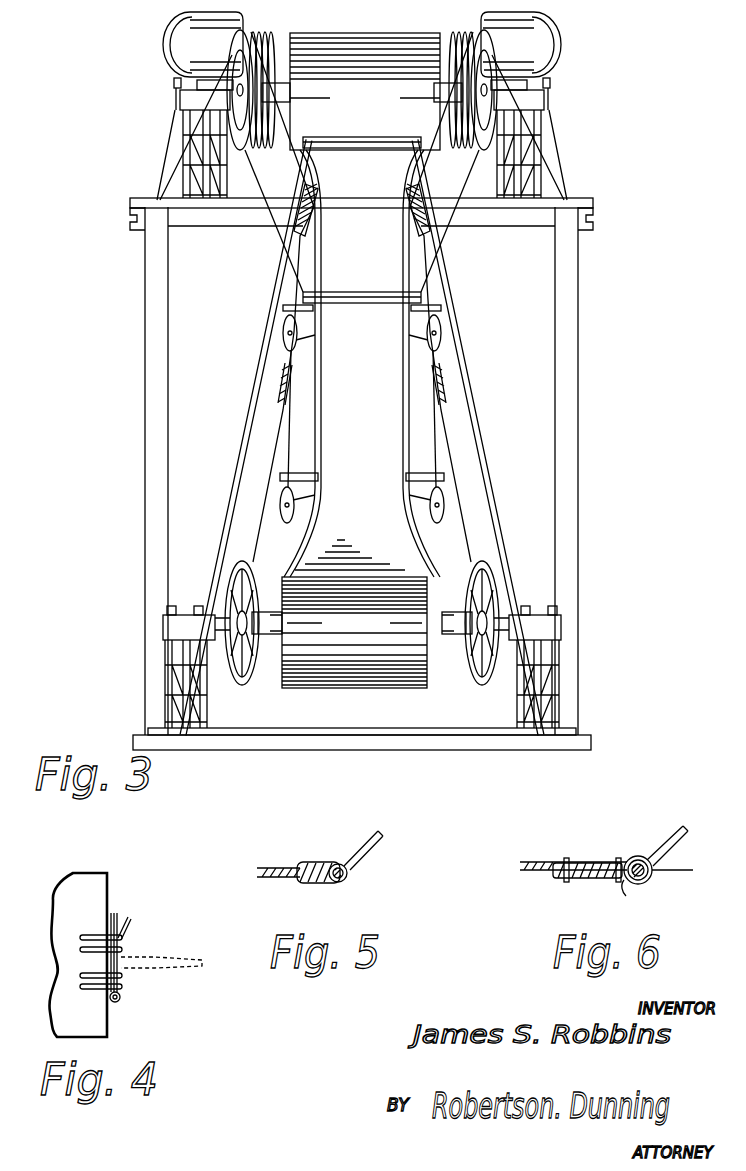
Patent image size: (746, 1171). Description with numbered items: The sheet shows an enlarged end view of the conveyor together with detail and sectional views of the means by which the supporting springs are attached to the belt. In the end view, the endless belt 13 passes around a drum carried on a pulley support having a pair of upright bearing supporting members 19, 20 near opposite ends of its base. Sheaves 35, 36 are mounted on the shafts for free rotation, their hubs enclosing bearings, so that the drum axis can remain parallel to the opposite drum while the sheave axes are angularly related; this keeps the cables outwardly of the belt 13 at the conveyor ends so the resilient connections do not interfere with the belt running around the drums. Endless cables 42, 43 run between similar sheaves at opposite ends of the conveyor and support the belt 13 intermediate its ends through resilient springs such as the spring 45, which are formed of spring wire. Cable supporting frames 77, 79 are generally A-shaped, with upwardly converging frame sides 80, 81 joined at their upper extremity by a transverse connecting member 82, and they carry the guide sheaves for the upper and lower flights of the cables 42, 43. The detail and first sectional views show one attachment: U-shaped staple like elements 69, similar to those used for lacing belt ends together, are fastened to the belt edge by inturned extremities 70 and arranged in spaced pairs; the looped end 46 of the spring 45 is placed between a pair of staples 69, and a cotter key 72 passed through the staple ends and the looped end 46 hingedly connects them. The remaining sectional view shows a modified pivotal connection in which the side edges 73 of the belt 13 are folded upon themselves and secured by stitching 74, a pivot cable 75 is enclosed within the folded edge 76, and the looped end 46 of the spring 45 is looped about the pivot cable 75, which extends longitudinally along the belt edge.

In FIG. 3, the endless belt 13 is at (364, 637).
In FIG. 4, the endless belt 13 is at (100, 888).
In FIG. 6, the endless belt 13 is at (541, 861).
In FIG. 3, the upright bearing supporting member 19 is at (180, 632).
In FIG. 3, the upright bearing supporting member 20 is at (545, 634).
In FIG. 3, the sheave 35 is at (256, 686).
In FIG. 3, the sheave 36 is at (462, 686).
In FIG. 3, the endless cable 42 is at (258, 513).
In FIG. 3, the endless cable 43 is at (458, 522).
In FIG. 5, the resilient spring 45 is at (358, 845).
In FIG. 6, the resilient spring 45 is at (672, 848).
In FIG. 5, the looped end 46 is at (345, 882).
In FIG. 6, the looped end 46 is at (640, 856).
In FIG. 4, the staple like element 69 is at (123, 950).
In FIG. 5, the staple like element 69 is at (320, 862).
In FIG. 5, the inturned extremity 70 is at (298, 868).
In FIG. 4, the cotter key 72 is at (117, 1003).
In FIG. 6, the side edge 73 is at (578, 878).
In FIG. 6, the stitching 74 is at (617, 858).
In FIG. 6, the pivot cable 75 is at (640, 885).
In FIG. 6, the folded edge 76 is at (693, 871).
In FIG. 3, the cable supporting frame 77 is at (437, 425).
In FIG. 3, the cable supporting frame 79 is at (460, 363).
In FIG. 3, the frame side 80 is at (272, 330).
In FIG. 3, the frame side 81 is at (443, 322).
In FIG. 3, the transverse connecting member 82 is at (390, 137).